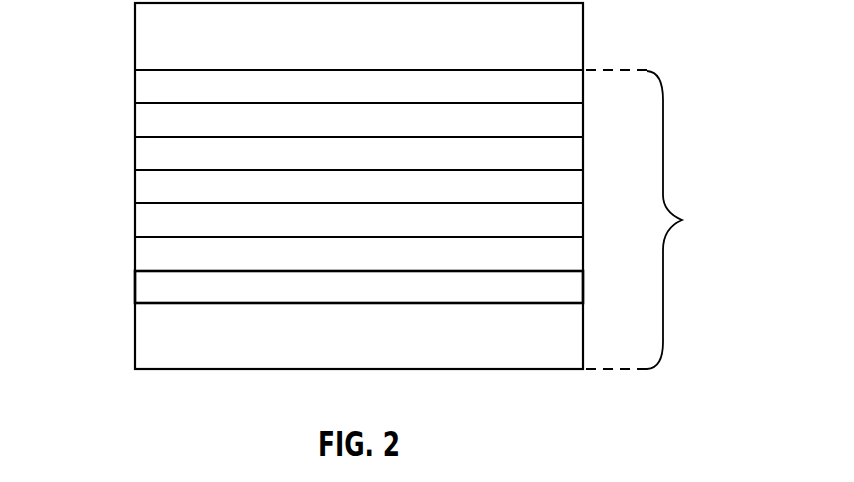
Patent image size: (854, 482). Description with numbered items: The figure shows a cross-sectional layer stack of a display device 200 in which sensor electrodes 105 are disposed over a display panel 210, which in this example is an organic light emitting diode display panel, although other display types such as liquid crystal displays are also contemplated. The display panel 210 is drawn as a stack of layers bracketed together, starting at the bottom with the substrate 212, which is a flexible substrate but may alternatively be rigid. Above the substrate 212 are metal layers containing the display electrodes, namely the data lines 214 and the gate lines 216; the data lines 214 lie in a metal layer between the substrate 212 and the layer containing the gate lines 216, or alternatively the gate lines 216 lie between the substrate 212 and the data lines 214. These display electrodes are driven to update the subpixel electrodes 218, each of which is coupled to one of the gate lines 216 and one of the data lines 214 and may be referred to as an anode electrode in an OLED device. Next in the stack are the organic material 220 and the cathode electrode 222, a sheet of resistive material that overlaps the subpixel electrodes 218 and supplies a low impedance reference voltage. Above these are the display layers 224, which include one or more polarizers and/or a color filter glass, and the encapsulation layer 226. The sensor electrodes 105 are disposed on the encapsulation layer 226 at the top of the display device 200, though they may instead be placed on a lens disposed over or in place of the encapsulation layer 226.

The display device 200 is at (689, 127).
The sensor electrodes 105 is at (135, 37).
The encapsulation layer 226 is at (135, 87).
The display layers 224 is at (135, 121).
The cathode electrode 222 is at (135, 153).
The organic material 220 is at (135, 186).
The subpixel electrodes 218 is at (135, 220).
The gate lines 216 is at (135, 253).
The data lines 214 is at (135, 287).
The substrate 212 is at (135, 337).
The display panel 210 is at (661, 219).